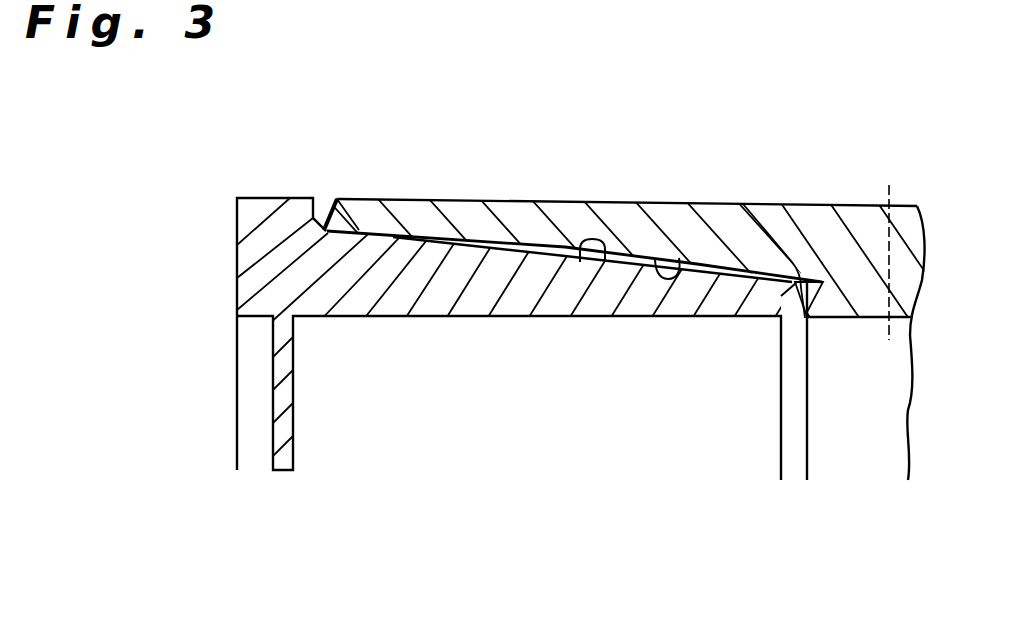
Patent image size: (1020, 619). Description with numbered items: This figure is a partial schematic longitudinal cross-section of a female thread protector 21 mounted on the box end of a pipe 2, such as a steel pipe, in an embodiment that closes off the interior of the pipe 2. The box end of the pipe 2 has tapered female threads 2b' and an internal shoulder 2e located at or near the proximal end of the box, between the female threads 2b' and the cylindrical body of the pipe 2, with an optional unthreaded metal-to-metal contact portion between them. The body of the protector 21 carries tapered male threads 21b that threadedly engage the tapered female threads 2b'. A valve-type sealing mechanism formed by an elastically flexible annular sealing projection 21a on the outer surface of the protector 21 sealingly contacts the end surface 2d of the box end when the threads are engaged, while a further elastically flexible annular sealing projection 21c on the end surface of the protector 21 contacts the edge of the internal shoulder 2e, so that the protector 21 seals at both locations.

The pipe 2 is at (494, 206).
The tapered female threads 2b' is at (658, 214).
The end surface of the box end 2d is at (318, 216).
The internal shoulder 2e is at (743, 205).
The female thread protector 21 is at (478, 307).
The annular sealing projection 21a is at (318, 216).
The tapered male threads 21b is at (580, 263).
The annular sealing projection 21c is at (796, 286).